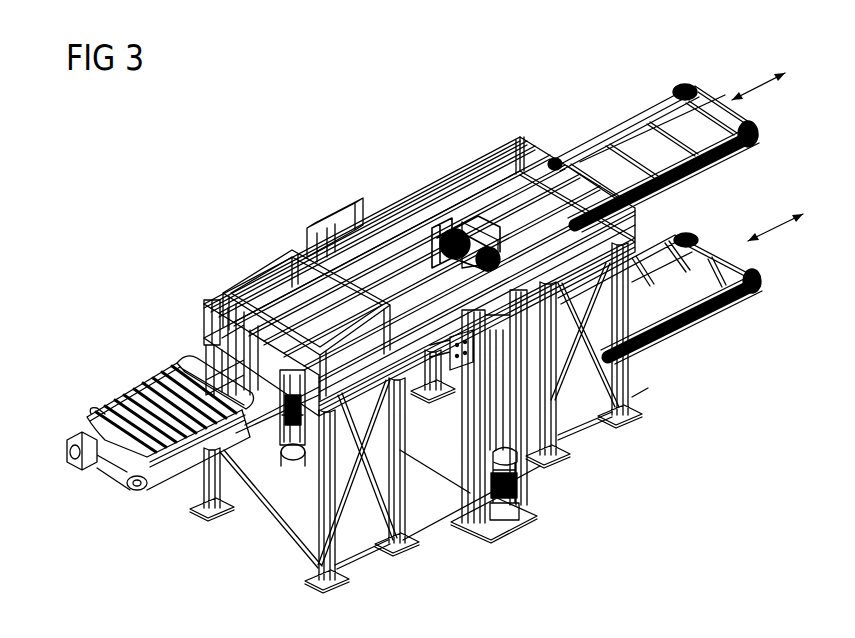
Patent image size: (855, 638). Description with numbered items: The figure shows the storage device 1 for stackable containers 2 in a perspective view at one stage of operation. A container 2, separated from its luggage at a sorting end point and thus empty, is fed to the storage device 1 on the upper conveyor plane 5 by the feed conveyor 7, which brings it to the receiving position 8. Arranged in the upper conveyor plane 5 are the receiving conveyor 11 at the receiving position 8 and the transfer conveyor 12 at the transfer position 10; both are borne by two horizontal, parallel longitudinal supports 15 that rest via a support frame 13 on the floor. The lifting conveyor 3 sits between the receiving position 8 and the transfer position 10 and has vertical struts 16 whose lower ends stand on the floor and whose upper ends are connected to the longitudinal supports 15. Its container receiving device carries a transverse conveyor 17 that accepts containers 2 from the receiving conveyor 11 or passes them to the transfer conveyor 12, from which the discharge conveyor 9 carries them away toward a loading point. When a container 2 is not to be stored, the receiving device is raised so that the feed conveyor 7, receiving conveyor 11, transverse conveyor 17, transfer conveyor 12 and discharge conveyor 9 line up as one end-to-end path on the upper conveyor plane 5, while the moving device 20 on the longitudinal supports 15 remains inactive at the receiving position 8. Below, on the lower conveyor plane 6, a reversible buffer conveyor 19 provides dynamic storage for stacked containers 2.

The storage device 1 is at (335, 100).
The container 2 is at (131, 392).
The lifting conveyor 3 is at (538, 517).
The upper conveyor plane 5 is at (765, 93).
The lower conveyor plane 6 is at (772, 236).
The feed conveyor 7 is at (74, 441).
The receiving position 8 is at (235, 250).
The discharge conveyor 9 is at (620, 126).
The transfer position 10 is at (497, 128).
The receiving conveyor 11 is at (208, 312).
The transfer conveyor 12 is at (480, 218).
The support frame 13 is at (401, 514).
The longitudinal supports 15 is at (432, 188).
The vertical struts 16 is at (521, 449).
The transverse conveyor 17 is at (408, 236).
The buffer conveyor 19 is at (704, 324).
The moving device 20 is at (266, 250).